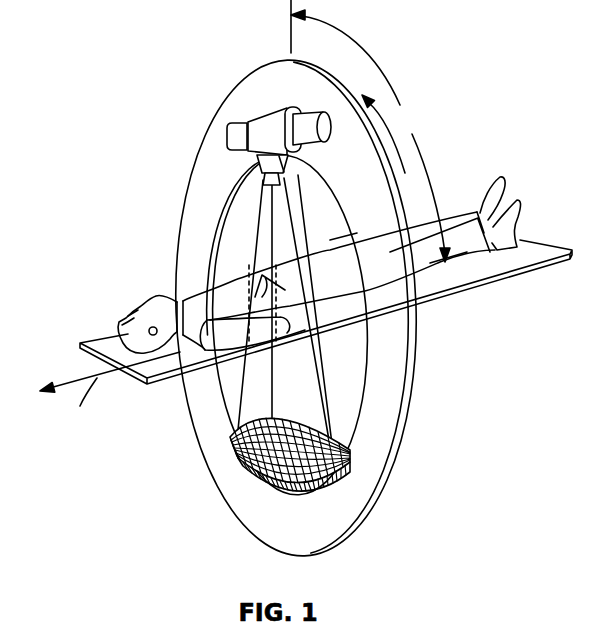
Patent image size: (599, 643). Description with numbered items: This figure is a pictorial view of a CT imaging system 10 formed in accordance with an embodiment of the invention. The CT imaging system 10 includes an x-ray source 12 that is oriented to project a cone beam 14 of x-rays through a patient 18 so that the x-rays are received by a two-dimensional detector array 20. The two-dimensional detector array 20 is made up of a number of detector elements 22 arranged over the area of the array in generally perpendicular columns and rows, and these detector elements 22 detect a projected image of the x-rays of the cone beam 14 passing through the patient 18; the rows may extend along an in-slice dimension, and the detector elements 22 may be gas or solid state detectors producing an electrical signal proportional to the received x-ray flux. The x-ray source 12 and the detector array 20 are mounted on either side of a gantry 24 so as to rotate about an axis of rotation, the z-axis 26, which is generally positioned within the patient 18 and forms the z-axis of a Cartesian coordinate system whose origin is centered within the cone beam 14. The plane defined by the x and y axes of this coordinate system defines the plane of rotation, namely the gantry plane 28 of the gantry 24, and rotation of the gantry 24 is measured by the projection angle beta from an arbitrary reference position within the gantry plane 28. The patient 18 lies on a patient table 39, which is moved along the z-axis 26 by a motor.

The CT imaging system 10 is at (104, 82).
The x-ray source 12 is at (265, 105).
The cone beam 14 is at (313, 213).
The patient 18 is at (119, 299).
The two-dimensional detector array 20 is at (366, 473).
The detector elements 22 is at (228, 442).
The gantry 24 is at (393, 386).
The z-axis 26 is at (70, 378).
The gantry plane 28 is at (363, 183).
The patient table 39 is at (134, 380).